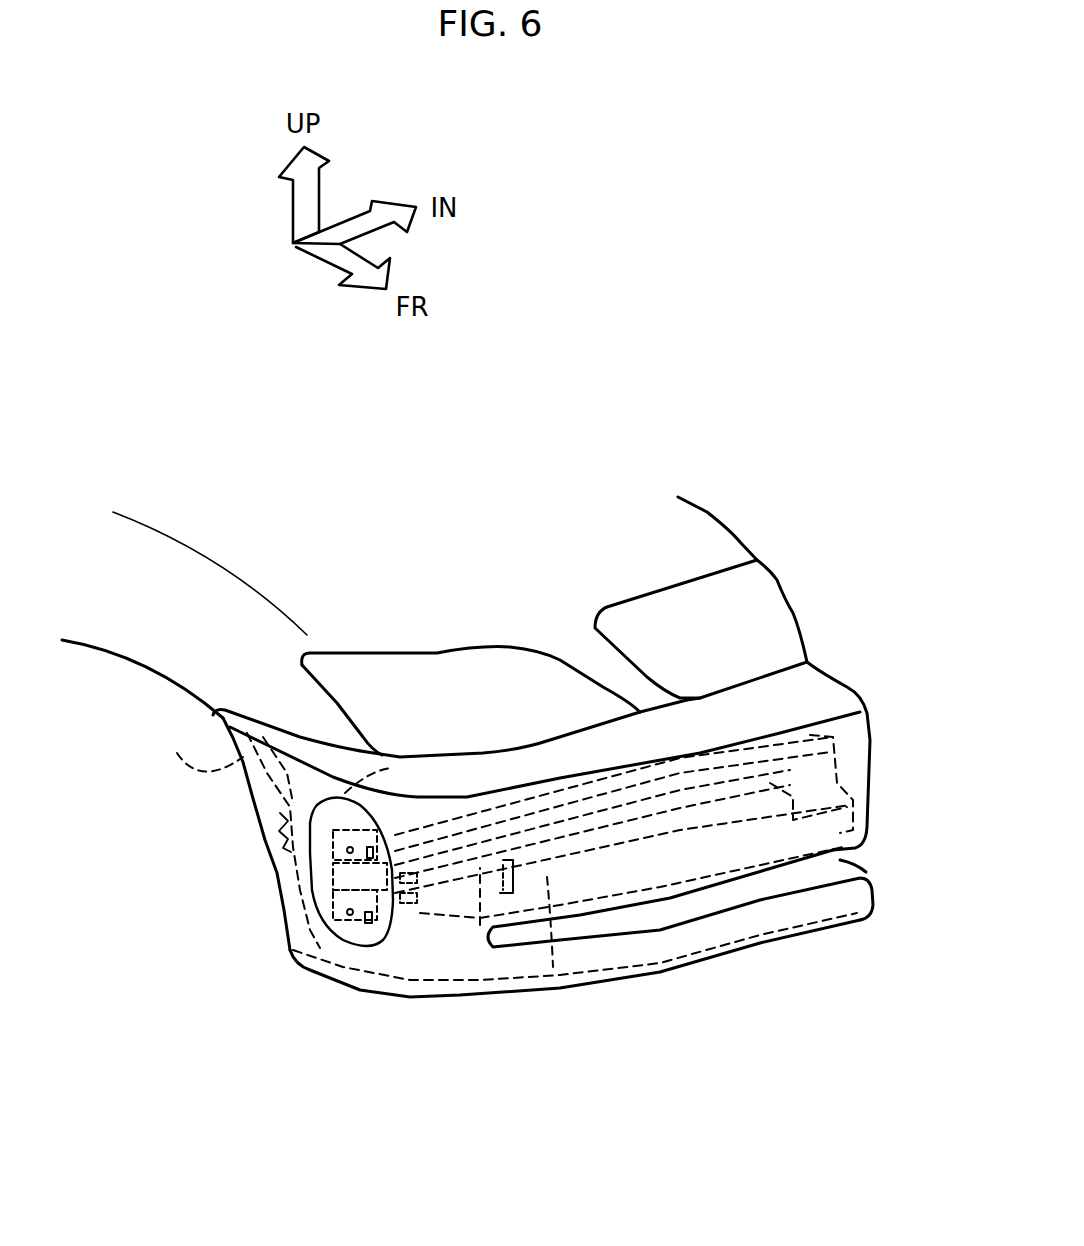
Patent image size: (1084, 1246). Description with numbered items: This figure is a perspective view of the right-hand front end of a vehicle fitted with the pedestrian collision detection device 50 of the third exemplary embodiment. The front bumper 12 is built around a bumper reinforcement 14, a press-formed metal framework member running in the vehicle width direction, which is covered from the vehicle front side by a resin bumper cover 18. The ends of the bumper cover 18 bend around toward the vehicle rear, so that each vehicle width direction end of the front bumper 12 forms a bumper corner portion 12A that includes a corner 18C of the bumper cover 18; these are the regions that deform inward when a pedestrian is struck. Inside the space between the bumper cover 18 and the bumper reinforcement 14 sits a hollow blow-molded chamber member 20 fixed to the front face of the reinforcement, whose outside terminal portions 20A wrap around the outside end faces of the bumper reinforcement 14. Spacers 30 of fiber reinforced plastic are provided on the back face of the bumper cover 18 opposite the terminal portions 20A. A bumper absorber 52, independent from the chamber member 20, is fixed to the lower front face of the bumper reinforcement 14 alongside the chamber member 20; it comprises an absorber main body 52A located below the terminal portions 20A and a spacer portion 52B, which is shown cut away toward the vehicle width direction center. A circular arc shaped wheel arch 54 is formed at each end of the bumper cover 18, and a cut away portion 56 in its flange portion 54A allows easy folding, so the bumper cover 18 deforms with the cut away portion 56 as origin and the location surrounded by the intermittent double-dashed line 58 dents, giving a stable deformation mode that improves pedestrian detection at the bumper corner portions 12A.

The front bumper 12 is at (687, 983).
The bumper corner portion 12A is at (372, 955).
The bumper reinforcement 14 is at (647, 773).
The bumper cover 18 is at (748, 870).
The corner 18C is at (383, 957).
The chamber member 20 is at (833, 737).
The terminal portion 20A is at (410, 827).
The spacer 30 is at (362, 836).
The pedestrian collision detection device 50 is at (402, 953).
The bumper absorber 52 is at (480, 928).
The absorber main body 52A is at (430, 913).
The spacer portion 52B is at (553, 970).
The wheel arch 54 is at (272, 897).
The flange portion 54A is at (192, 749).
The cut away portion 56 is at (283, 812).
The intermittent double-dashed line 58 is at (347, 793).